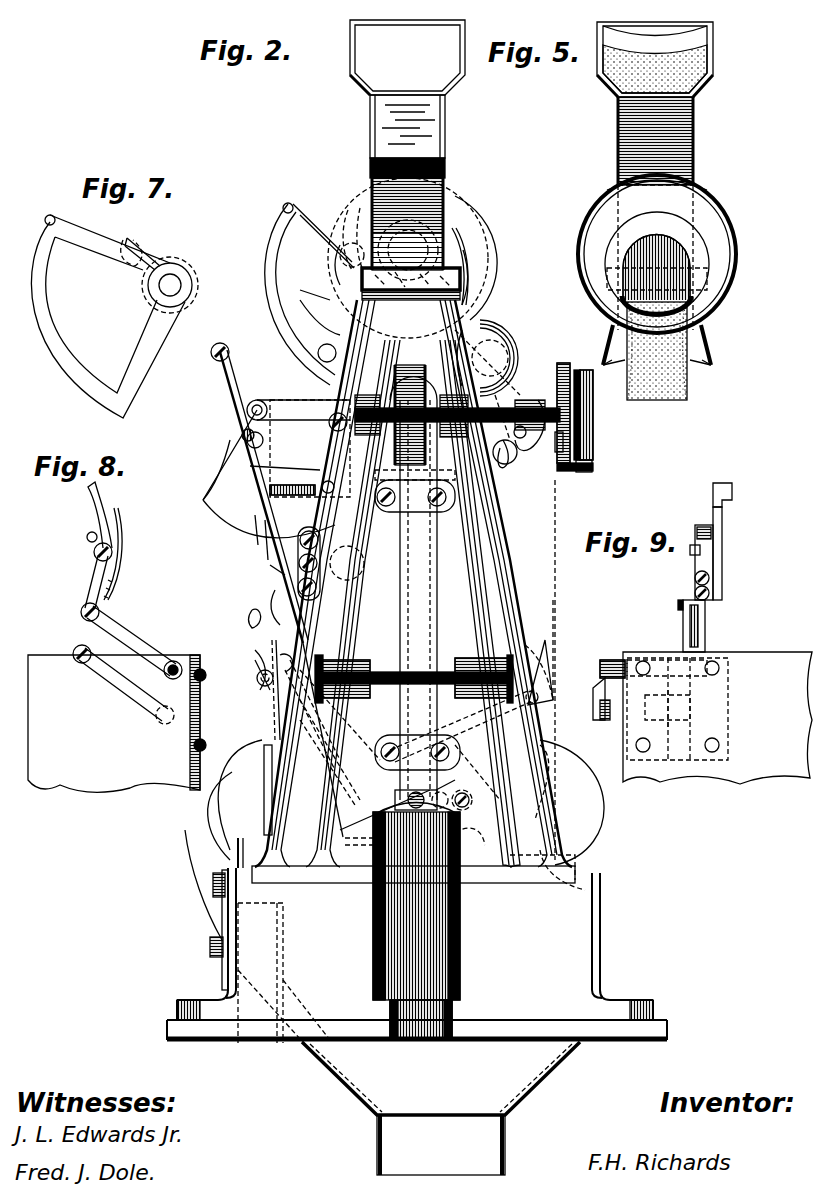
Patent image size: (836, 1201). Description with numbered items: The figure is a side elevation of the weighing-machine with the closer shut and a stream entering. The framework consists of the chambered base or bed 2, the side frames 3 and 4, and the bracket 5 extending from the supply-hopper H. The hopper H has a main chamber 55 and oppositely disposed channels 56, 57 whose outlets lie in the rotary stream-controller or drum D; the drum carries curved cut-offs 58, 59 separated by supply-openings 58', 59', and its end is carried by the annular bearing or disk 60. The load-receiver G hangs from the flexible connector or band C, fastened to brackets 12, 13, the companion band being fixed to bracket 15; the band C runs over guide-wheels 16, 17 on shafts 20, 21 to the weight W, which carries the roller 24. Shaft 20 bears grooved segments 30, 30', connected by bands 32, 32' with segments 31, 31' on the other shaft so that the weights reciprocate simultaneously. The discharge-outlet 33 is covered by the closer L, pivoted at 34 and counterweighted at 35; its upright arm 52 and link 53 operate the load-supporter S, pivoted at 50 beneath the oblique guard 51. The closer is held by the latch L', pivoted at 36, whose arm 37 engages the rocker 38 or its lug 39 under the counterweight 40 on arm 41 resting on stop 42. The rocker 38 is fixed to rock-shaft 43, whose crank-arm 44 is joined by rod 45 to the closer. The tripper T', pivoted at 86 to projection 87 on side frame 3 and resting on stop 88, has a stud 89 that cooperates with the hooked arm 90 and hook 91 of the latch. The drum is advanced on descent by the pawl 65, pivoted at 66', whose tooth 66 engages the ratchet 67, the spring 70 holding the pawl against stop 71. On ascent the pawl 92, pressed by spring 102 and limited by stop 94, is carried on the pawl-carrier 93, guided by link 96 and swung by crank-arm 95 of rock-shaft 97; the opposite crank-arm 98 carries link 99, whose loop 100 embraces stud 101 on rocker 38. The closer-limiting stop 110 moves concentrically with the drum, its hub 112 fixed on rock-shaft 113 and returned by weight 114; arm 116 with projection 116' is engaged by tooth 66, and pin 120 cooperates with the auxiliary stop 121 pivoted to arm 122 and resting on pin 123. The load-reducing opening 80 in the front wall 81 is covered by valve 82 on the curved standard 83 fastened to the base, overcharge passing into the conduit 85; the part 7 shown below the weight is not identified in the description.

In FIG. 2, the supply-hopper H is at (407, 57).
In FIG. 5, the supply-hopper H is at (713, 55).
In FIG. 2, the main chamber 55 is at (352, 76).
In FIG. 5, the main chamber 55 is at (600, 80).
In FIG. 2, the branch or channel 57 is at (440, 125).
In FIG. 2, the bracket 5 is at (444, 160).
In FIG. 2, the hub 112 is at (407, 224).
In FIG. 7, the hub 112 is at (180, 272).
In FIG. 2, the rock-shaft or pivot 113 is at (455, 228).
In FIG. 2, the pawl-carrier 93 is at (411, 297).
In FIG. 8, the pawl-carrier 93 is at (90, 583).
In FIG. 9, the pawl-carrier 93 is at (695, 568).
In FIG. 2, the stream-controller or drum D is at (462, 205).
In FIG. 5, the stream-controller or drum D is at (664, 254).
In FIG. 2, the pawl 92 is at (462, 243).
In FIG. 8, the pawl 92 is at (105, 515).
In FIG. 9, the pawl 92 is at (728, 492).
In FIG. 2, the spring 102 is at (470, 268).
In FIG. 8, the spring 102 is at (118, 552).
In FIG. 9, the spring 102 is at (722, 557).
In FIG. 2, the tooth 66 is at (348, 217).
In FIG. 2, the ratchet 67 is at (345, 250).
In FIG. 2, the actuator or pawl 65 is at (340, 262).
In FIG. 2, the auxiliary stop 120 is at (284, 205).
In FIG. 7, the auxiliary stop 120 is at (48, 212).
In FIG. 2, the closer-limiting stop 110 is at (275, 240).
In FIG. 7, the closer-limiting stop 110 is at (63, 367).
In FIG. 2, the arm 122 is at (300, 292).
In FIG. 2, the auxiliary stop 121 is at (300, 310).
In FIG. 2, the pin 123 is at (318, 357).
In FIG. 2, the side frame 3 is at (502, 578).
In FIG. 2, the connector or band C is at (419, 600).
In FIG. 2, the guide-wheel 16 is at (428, 455).
In FIG. 2, the pivot 66' is at (334, 417).
In FIG. 2, the supporting-shaft 20 is at (504, 455).
In FIG. 2, the bracket 12 is at (452, 500).
In FIG. 2, the segment 30 is at (556, 399).
In FIG. 2, the band 32' is at (584, 392).
In FIG. 2, the segment 31' is at (601, 415).
In FIG. 2, the segment 30' is at (592, 453).
In FIG. 2, the segment 31 is at (569, 470).
In FIG. 2, the band 32 is at (594, 479).
In FIG. 2, the weight 114 is at (500, 325).
In FIG. 2, the bracket 15 is at (487, 362).
In FIG. 2, the guide-link 96 is at (505, 395).
In FIG. 8, the guide-link 96 is at (120, 688).
In FIG. 9, the guide-link 96 is at (692, 694).
In FIG. 2, the rock-shaft 97 is at (540, 400).
In FIG. 8, the rock-shaft 97 is at (173, 660).
In FIG. 9, the rock-shaft 97 is at (655, 660).
In FIG. 2, the crank-arm 98 is at (512, 462).
In FIG. 9, the crank-arm 98 is at (602, 668).
In FIG. 2, the crank-arm 44 is at (240, 382).
In FIG. 2, the rock-shaft 43 is at (247, 408).
In FIG. 2, the stud 101 is at (240, 430).
In FIG. 2, the loop 100 is at (303, 448).
In FIG. 2, the link 99 is at (245, 440).
In FIG. 9, the link 99 is at (593, 705).
In FIG. 2, the rod 45 is at (250, 466).
In FIG. 2, the retracting-spring 70 is at (300, 485).
In FIG. 2, the stop 71 is at (320, 478).
In FIG. 2, the rocker 38 is at (212, 500).
In FIG. 2, the lug 39 is at (255, 522).
In FIG. 2, the arm 37 is at (265, 538).
In FIG. 2, the pivot 36 is at (309, 532).
In FIG. 2, the arm 41 is at (318, 535).
In FIG. 2, the stop 42 is at (316, 588).
In FIG. 2, the counterweight 40 is at (362, 562).
In FIG. 2, the latch L' is at (266, 571).
In FIG. 2, the hooked arm 90 is at (270, 596).
In FIG. 2, the hook 91 is at (250, 614).
In FIG. 2, the stud 89 is at (258, 652).
In FIG. 2, the projection 87 is at (288, 660).
In FIG. 2, the tripper T' is at (248, 672).
In FIG. 2, the pivot 86 is at (258, 680).
In FIG. 2, the front wall 81 is at (272, 708).
In FIG. 2, the load-reducing opening 80 is at (266, 748).
In FIG. 2, the load-reducing valve 82 is at (264, 770).
In FIG. 2, the curved arm or standard 83 is at (215, 812).
In FIG. 2, the stop 88 is at (300, 700).
In FIG. 2, the roller 24 is at (375, 760).
In FIG. 2, the guide-wheel 17 is at (430, 645).
In FIG. 2, the supporting-shaft 21 is at (448, 660).
In FIG. 2, the bracket 13 is at (388, 740).
In FIG. 2, the guard 51 is at (540, 665).
In FIG. 2, the pivot 50 is at (540, 697).
In FIG. 2, the load-supporter S is at (462, 745).
In FIG. 2, the link 53 is at (448, 782).
In FIG. 2, the upright arm 52 is at (468, 802).
In FIG. 2, the closer L is at (415, 846).
In FIG. 2, the counterweight 35 is at (595, 828).
In FIG. 2, the pivot 34 is at (505, 862).
In FIG. 2, the discharge-outlet 33 is at (413, 875).
In FIG. 2, the weight W is at (460, 955).
In FIG. 2, the shaft 7 is at (405, 1025).
In FIG. 2, the base or bed 2 is at (595, 930).
In FIG. 2, the conduit 85 is at (283, 960).
In FIG. 2, the load-receiver G is at (564, 670).
In FIG. 8, the load-receiver G is at (117, 723).
In FIG. 9, the load-receiver G is at (717, 718).
In FIG. 5, the branch or channel 56 is at (693, 138).
In FIG. 5, the supply-opening 59' is at (667, 169).
In FIG. 5, the cut-off 59 is at (684, 264).
In FIG. 5, the cut-off 58 is at (629, 295).
In FIG. 5, the annular bearing or disk 60 is at (646, 215).
In FIG. 5, the supply-opening 58' is at (673, 355).
In FIG. 5, the side frame 4 is at (692, 372).
In FIG. 7, the arm 116 is at (159, 244).
In FIG. 7, the projection 116' is at (148, 276).
In FIG. 8, the stop 94 is at (88, 538).
In FIG. 9, the stop 94 is at (708, 528).
In FIG. 8, the crank-arm 95 is at (125, 628).
In FIG. 9, the crank-arm 95 is at (683, 628).